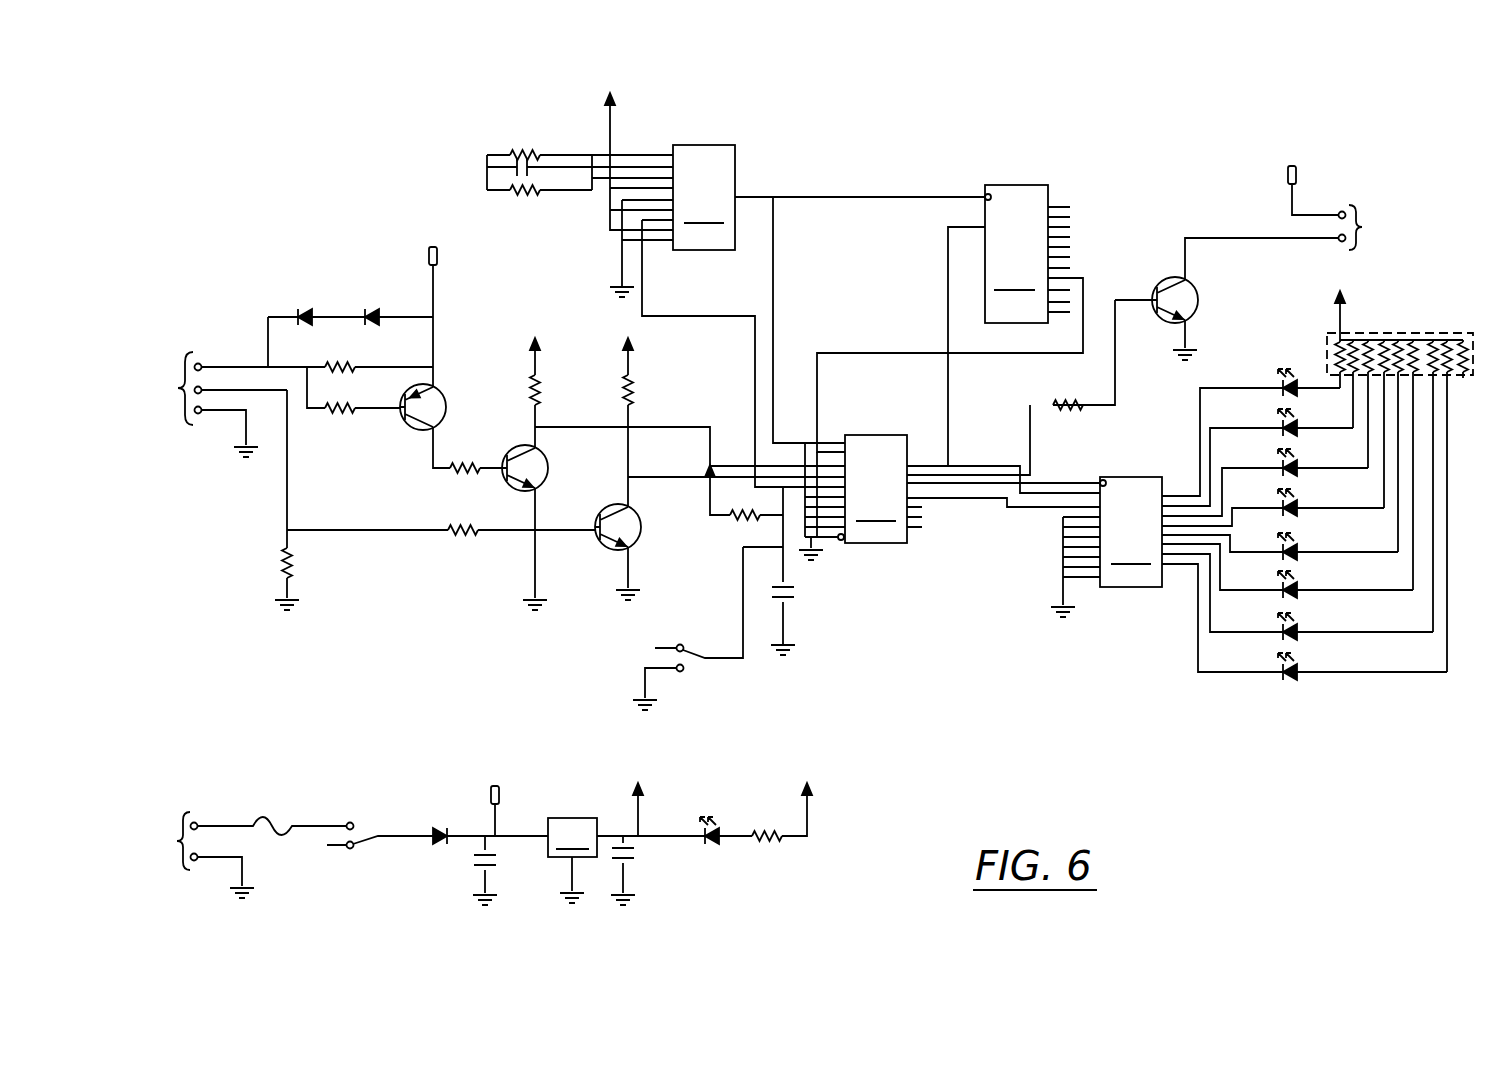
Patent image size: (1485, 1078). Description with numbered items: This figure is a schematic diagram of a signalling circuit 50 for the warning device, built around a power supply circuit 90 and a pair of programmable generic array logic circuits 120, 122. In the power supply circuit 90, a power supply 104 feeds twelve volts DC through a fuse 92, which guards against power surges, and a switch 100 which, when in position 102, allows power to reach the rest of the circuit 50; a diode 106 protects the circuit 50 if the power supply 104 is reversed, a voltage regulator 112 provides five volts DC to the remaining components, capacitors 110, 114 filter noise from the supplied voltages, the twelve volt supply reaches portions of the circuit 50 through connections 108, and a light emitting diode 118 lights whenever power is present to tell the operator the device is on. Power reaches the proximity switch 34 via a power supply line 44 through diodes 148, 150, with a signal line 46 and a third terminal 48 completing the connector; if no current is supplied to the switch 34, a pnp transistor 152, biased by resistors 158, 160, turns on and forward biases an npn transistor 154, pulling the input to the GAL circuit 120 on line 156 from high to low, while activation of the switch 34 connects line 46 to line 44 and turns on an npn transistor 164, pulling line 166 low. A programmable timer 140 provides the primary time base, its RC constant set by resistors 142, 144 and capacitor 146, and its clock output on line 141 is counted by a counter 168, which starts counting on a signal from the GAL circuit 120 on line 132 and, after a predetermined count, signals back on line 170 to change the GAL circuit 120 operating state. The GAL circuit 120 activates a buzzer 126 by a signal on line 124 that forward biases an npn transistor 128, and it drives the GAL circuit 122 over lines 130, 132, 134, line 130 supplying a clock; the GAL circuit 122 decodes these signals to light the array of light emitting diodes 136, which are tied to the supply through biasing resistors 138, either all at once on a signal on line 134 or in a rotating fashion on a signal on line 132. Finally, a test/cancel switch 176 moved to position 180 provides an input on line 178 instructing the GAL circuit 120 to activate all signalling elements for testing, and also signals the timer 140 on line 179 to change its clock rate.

The proximity switch 34 is at (176, 388).
The power supply line 44 is at (208, 364).
The signal line 46 is at (244, 388).
The ground terminal 48 is at (232, 412).
The signalling circuit 50 is at (859, 727).
The power supply circuit 90 is at (448, 756).
The fuse 92 is at (270, 818).
The switch 100 is at (364, 835).
The switch position 102 is at (349, 820).
The power supply 104 is at (197, 855).
The diode 106 is at (430, 844).
The connections 108 is at (433, 246).
The capacitor 110 is at (490, 868).
The voltage regulator 112 is at (572, 860).
The capacitor 114 is at (628, 868).
The light emitting diode 118 is at (713, 845).
The GAL circuit 120 is at (860, 497).
The GAL circuit 122 is at (1106, 547).
The line 124 is at (955, 474).
The buzzer 126 is at (1374, 227).
The npn transistor 128 is at (1198, 292).
The line 130 is at (1045, 486).
The line 132 is at (946, 390).
The line 134 is at (1018, 510).
The light emitting diodes 136 is at (1296, 688).
The biasing resistors 138 is at (1387, 322).
The programmable timer 140 is at (704, 197).
The clock output line 141 is at (742, 198).
The resistor 142 is at (534, 136).
The resistor 144 is at (533, 192).
The capacitor 146 is at (508, 167).
The diode 148 is at (312, 292).
The diode 150 is at (374, 312).
The pnp transistor 152 is at (440, 392).
The npn transistor 154 is at (547, 458).
The line 156 is at (668, 426).
The resistor 158 is at (344, 366).
The resistor 160 is at (344, 406).
The npn transistor 164 is at (640, 540).
The line 166 is at (664, 462).
The counter 168 is at (1027, 254).
The line 170 is at (860, 353).
The test/cancel switch 176 is at (696, 656).
The line 178 is at (832, 542).
The line 179 is at (688, 317).
The switch position 180 is at (684, 671).